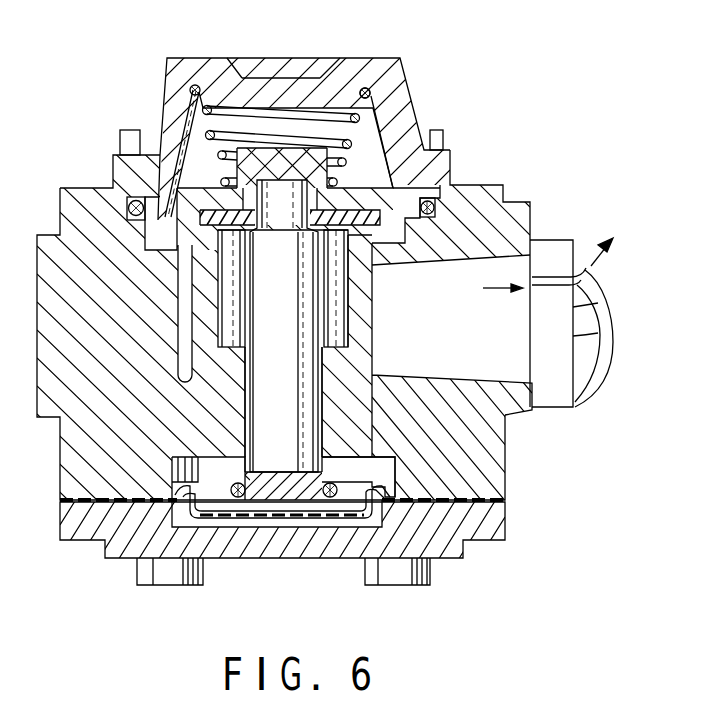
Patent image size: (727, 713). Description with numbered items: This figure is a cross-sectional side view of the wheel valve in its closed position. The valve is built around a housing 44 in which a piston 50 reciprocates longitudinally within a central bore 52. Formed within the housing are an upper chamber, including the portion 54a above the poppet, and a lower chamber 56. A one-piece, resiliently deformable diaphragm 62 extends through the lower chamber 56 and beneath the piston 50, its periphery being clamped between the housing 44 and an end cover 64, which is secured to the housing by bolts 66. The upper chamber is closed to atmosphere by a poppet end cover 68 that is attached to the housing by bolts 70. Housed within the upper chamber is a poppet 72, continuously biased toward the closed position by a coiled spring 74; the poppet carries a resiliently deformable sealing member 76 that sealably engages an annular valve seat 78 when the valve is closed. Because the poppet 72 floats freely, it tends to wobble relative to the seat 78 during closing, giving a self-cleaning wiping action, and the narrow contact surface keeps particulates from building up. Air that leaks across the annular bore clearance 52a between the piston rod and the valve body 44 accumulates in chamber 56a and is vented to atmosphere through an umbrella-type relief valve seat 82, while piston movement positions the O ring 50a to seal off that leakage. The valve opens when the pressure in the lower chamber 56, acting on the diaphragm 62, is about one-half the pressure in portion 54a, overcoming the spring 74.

The housing 44 is at (512, 194).
The piston 50 is at (284, 327).
The O ring 50a is at (174, 492).
The central bore 52 is at (327, 402).
The annular bore clearance 52a is at (244, 403).
The portion of upper chamber 54a is at (195, 128).
The lower chamber 56 is at (313, 527).
The chamber 56a is at (360, 465).
The diaphragm 62 is at (240, 515).
The end cover 64 is at (490, 523).
The bolts 66 is at (137, 583).
The poppet end cover 68 is at (173, 78).
The bolts 70 is at (113, 142).
The poppet 72 is at (265, 152).
The coiled spring 74 is at (366, 109).
The sealing member 76 is at (395, 218).
The annular valve seat 78 is at (200, 247).
The umbrella-type relief valve seat 82 is at (601, 284).